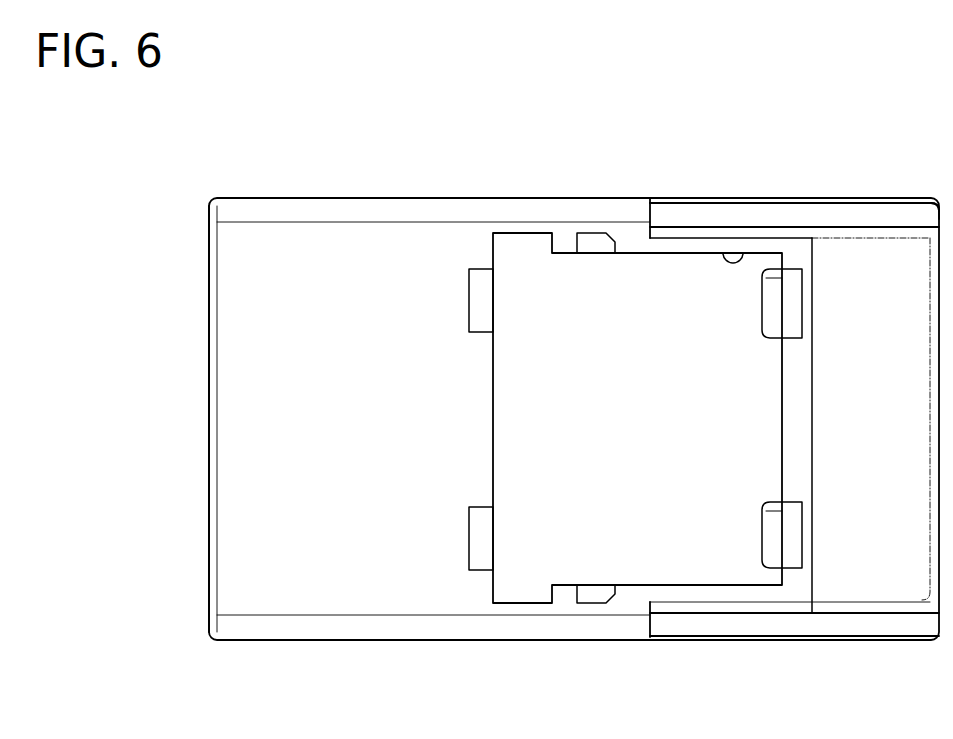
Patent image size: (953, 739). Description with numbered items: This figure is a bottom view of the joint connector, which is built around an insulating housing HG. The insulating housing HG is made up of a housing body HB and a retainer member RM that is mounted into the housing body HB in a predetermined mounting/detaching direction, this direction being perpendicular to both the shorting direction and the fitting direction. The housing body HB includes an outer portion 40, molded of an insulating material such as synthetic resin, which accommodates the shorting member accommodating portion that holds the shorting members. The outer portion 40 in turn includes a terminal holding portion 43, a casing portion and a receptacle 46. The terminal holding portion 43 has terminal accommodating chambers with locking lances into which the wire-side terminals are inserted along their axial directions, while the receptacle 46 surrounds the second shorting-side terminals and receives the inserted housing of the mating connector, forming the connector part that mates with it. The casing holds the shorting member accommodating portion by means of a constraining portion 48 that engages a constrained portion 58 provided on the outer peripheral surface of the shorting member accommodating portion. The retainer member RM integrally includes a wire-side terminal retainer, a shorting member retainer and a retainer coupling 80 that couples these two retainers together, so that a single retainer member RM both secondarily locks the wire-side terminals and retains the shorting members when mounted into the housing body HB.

The outer portion 40 is at (480, 198).
The terminal holding portion 43 is at (800, 210).
The receptacle 46 is at (331, 252).
The constraining portion 48 is at (741, 262).
The constrained portion 58 is at (594, 243).
The retainer coupling 80 is at (668, 275).
The housing body HB is at (532, 180).
The insulating housing HG is at (716, 645).
The retainer member RM is at (636, 545).